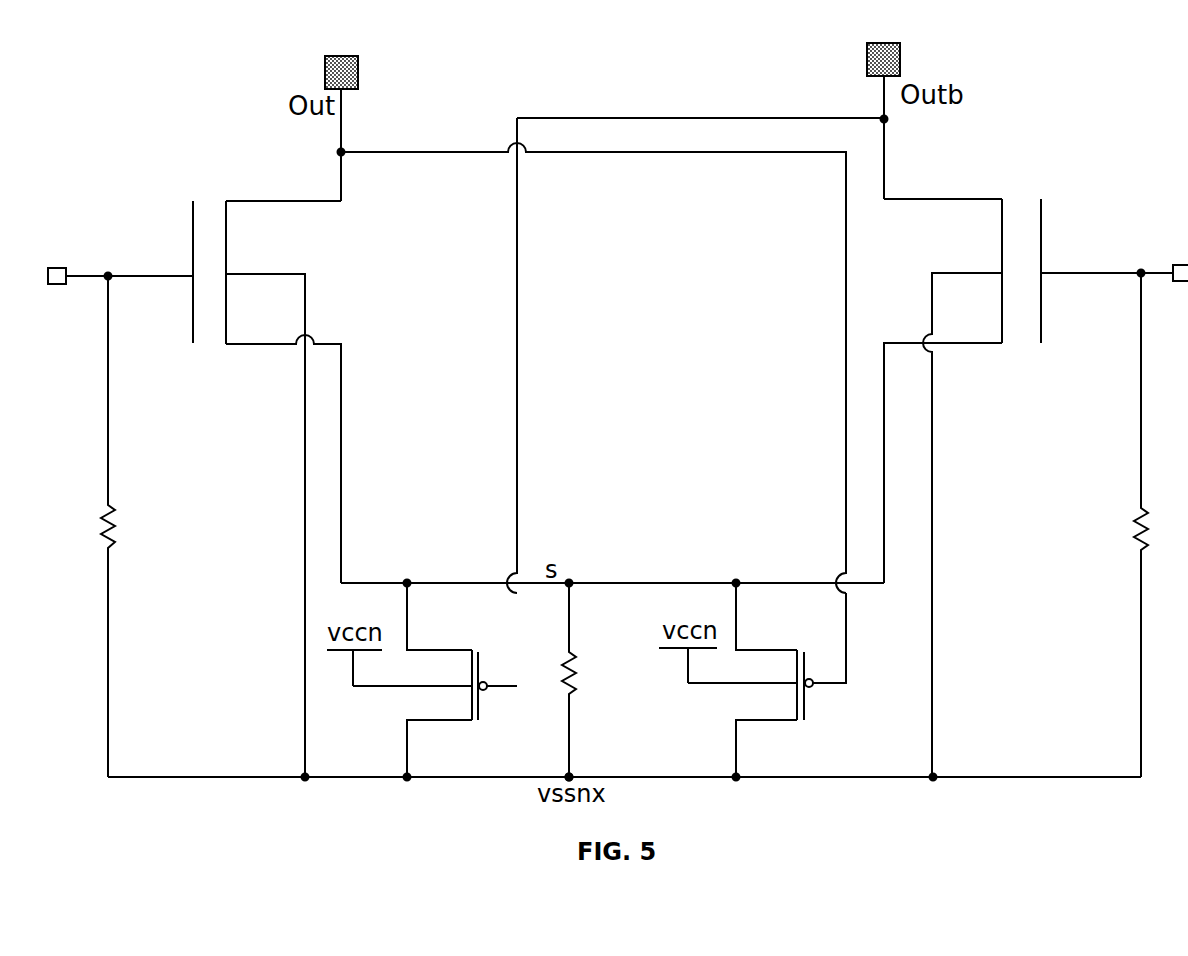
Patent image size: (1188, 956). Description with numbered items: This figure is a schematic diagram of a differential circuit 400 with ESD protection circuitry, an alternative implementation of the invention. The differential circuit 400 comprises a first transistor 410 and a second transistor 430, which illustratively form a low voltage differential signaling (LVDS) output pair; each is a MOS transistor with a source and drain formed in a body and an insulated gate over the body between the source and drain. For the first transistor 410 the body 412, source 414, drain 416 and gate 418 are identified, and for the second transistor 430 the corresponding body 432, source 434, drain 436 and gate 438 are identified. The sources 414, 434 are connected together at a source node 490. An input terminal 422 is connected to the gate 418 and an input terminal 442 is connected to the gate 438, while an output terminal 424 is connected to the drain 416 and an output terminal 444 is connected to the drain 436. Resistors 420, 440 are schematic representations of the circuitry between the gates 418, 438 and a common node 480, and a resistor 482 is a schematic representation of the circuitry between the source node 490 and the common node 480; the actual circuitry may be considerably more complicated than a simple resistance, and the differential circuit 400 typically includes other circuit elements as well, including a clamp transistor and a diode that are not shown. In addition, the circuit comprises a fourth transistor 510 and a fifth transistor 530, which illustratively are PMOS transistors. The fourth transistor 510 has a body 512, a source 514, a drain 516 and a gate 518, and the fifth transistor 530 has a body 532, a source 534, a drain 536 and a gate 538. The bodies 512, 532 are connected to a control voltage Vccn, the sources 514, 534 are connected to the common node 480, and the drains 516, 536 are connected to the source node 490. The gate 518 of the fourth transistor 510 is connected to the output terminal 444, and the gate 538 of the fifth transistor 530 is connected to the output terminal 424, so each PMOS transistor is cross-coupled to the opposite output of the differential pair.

The differential circuit 400 is at (143, 58).
The first transistor 410 is at (229, 475).
The body of first transistor 412 is at (292, 273).
The source of first transistor 414 is at (292, 343).
The drain of first transistor 416 is at (318, 199).
The gate of first transistor 418 is at (192, 253).
The resistor 420 is at (112, 527).
The input terminal 422 is at (80, 272).
The output terminal 424 is at (323, 70).
The second transistor 430 is at (1000, 461).
The body of second transistor 432 is at (972, 272).
The source of second transistor 434 is at (988, 343).
The drain of second transistor 436 is at (917, 199).
The gate of second transistor 438 is at (1045, 262).
The resistor 440 is at (1135, 530).
The input terminal 442 is at (1160, 272).
The output terminal 444 is at (903, 57).
The common node 480 is at (580, 776).
The resistor 482 is at (578, 672).
The source node 490 is at (569, 582).
The fourth transistor 510 is at (443, 680).
The body of fourth transistor 512 is at (462, 685).
The source of fourth transistor 514 is at (462, 719).
The drain of fourth transistor 516 is at (427, 650).
The gate of fourth transistor 518 is at (480, 668).
The fifth transistor 530 is at (775, 680).
The body of fifth transistor 532 is at (790, 683).
The source of fifth transistor 534 is at (790, 719).
The drain of fifth transistor 536 is at (756, 650).
The gate of fifth transistor 538 is at (809, 665).